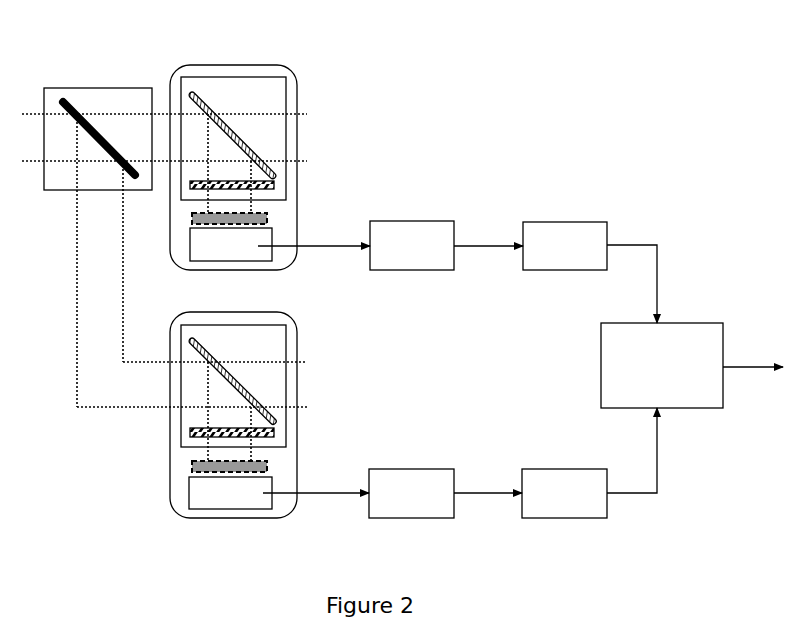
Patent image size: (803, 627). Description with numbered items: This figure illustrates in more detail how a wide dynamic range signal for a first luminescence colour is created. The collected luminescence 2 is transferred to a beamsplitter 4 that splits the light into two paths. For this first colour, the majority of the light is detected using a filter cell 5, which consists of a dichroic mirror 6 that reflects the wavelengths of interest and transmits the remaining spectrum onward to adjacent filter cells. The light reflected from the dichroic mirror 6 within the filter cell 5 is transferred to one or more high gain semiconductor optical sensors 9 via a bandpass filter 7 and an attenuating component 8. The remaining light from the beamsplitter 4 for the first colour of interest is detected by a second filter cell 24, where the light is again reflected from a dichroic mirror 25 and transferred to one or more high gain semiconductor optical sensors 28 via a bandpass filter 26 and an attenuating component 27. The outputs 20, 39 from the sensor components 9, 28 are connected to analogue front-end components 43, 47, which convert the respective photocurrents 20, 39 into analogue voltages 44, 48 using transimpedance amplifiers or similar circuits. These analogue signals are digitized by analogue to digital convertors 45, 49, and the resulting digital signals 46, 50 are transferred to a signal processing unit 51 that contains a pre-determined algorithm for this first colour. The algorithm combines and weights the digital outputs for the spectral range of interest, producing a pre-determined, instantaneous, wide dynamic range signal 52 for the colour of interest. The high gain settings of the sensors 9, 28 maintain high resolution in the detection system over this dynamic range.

The collected luminescence 2 is at (163, 280).
The beamsplitter 4 is at (75, 107).
The filter cell 5 is at (233, 158).
The dichroic mirror 6 is at (208, 103).
The bandpass filter 7 is at (192, 185).
The attenuating component 8 is at (193, 220).
The high gain semiconductor optical sensors 9 is at (231, 244).
The output 20 is at (314, 262).
The filter cell 24 is at (233, 406).
The dichroic mirror 25 is at (207, 350).
The bandpass filter 26 is at (192, 433).
The attenuating component 27 is at (193, 470).
The high gain semiconductor optical sensors 28 is at (230, 493).
The output 39 is at (316, 510).
The analogue front-end component 43 is at (412, 234).
The analogue voltage 44 is at (488, 233).
The analogue to digital convertor 45 is at (565, 234).
The digital signal 46 is at (650, 284).
The analogue front-end component 47 is at (411, 481).
The analogue voltage 48 is at (488, 481).
The analogue to digital convertor 49 is at (564, 481).
The digital signal 50 is at (651, 450).
The signal processing unit 51 is at (645, 365).
The wide dynamic range signal 52 is at (753, 351).